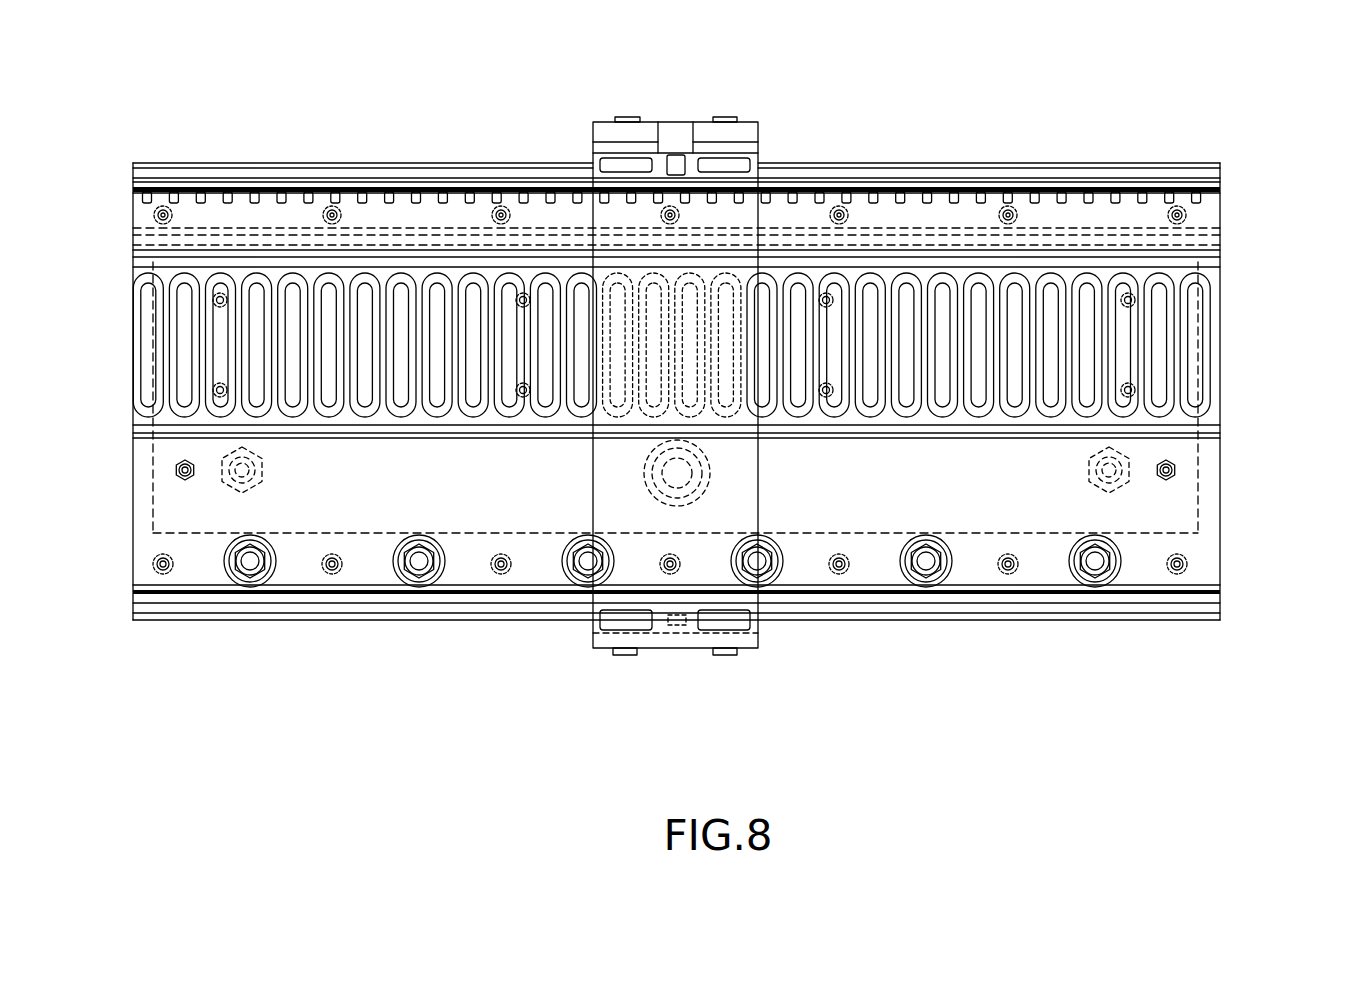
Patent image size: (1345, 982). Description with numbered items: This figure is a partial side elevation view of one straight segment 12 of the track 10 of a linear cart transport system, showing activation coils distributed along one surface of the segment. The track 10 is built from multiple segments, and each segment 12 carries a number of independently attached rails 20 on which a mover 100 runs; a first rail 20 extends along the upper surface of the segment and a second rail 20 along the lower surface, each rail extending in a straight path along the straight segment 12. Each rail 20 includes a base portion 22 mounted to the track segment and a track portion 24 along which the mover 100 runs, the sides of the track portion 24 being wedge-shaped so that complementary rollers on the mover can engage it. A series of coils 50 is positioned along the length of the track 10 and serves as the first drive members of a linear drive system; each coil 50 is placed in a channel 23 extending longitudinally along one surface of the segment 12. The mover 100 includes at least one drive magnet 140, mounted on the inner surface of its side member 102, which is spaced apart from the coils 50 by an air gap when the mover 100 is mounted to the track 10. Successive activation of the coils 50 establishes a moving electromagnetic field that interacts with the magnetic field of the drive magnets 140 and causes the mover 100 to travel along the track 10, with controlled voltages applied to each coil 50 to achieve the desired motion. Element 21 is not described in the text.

The track 10 is at (722, 351).
The straight segment 12 is at (722, 395).
The rail 20 is at (676, 395).
The mounting plate 21 is at (1208, 483).
The base portion 22 is at (878, 182).
The channel 23 is at (1221, 296).
The track portion 24 is at (932, 168).
The coil 50 is at (1173, 405).
The mover 100 is at (713, 366).
The side member 102 is at (758, 500).
The drive magnet 140 is at (718, 415).